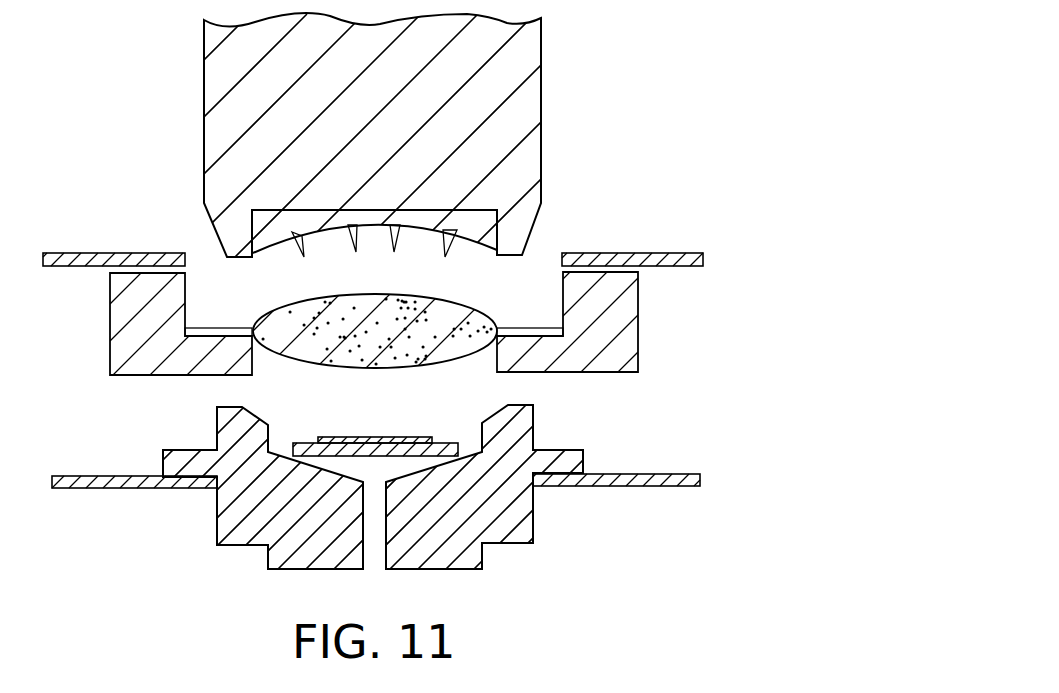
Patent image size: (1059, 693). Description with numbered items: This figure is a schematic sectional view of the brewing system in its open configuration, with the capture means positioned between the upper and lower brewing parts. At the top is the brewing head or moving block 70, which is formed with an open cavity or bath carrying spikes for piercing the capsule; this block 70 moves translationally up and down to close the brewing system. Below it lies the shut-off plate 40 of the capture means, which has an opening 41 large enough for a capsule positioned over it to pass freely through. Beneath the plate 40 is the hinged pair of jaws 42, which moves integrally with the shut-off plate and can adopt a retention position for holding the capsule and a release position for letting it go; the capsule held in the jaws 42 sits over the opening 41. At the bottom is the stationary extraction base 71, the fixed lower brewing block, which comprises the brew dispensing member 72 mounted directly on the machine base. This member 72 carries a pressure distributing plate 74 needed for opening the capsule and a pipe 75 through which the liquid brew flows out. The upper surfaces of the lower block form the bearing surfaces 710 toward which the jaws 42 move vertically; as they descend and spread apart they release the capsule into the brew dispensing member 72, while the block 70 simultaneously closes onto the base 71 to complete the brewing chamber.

The moving block 70 is at (541, 143).
The opening 41 is at (539, 257).
The shut-off plate 40 is at (678, 252).
The jaws 42 is at (641, 315).
The brew dispensing member 72 is at (266, 556).
The bearing surfaces 710 is at (514, 405).
The pipe 75 is at (368, 571).
The pressure distributing plate 74 is at (373, 437).
The stationary extraction base 71 is at (637, 495).